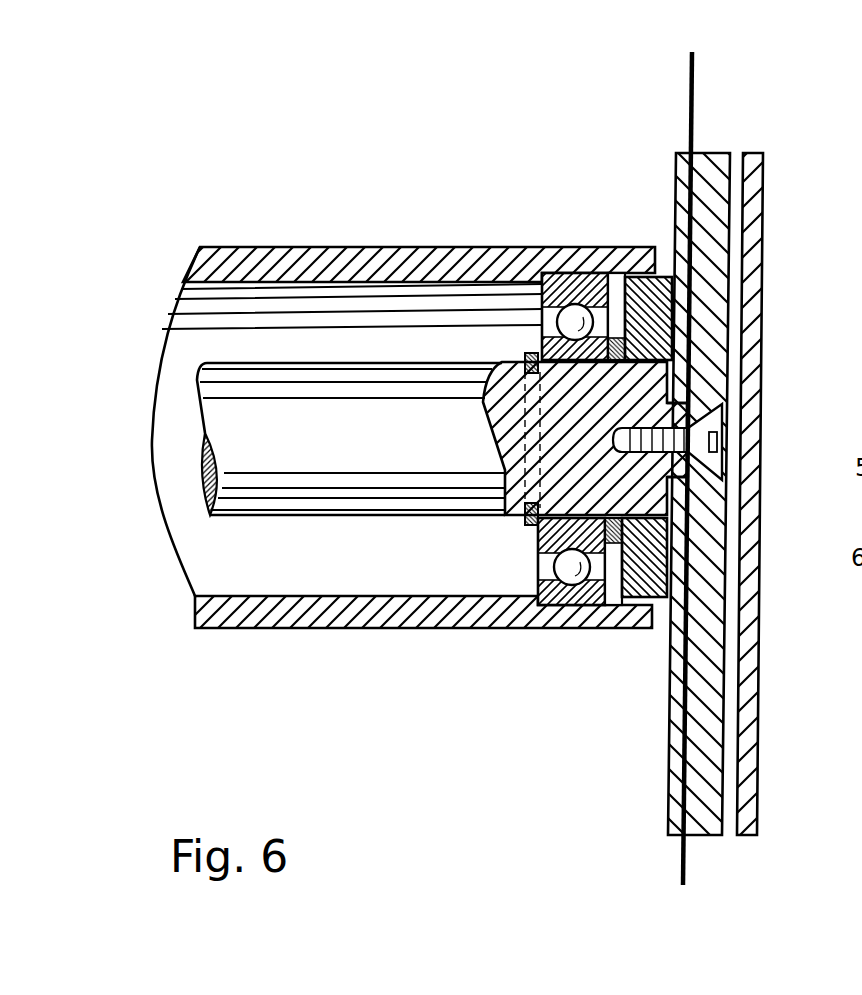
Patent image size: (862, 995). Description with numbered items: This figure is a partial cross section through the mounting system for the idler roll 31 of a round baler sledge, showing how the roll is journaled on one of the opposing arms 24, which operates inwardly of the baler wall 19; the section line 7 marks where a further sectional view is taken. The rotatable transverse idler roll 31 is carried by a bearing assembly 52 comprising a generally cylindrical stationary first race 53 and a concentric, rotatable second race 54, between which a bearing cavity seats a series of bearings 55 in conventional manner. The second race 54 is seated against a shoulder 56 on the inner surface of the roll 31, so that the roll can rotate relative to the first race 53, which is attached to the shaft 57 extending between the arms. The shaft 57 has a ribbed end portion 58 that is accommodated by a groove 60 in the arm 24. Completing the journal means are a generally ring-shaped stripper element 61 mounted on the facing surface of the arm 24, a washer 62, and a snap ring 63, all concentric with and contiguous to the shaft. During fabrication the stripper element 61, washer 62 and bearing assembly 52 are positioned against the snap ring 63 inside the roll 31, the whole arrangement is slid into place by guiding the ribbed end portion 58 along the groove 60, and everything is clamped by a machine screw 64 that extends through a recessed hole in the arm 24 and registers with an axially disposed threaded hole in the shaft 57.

The section line 7- 7 is at (565, 82).
The wall 19 is at (762, 213).
The arm 24 is at (714, 154).
The idler roll 31 is at (293, 238).
The bearing assembly 52 is at (458, 554).
The first race 53 is at (537, 540).
The second race 54 is at (537, 588).
The bearings 55 is at (565, 606).
The shoulder 56 is at (540, 275).
The shaft 57 is at (305, 527).
The ribbed end portion 58 is at (688, 474).
The groove 60 is at (683, 393).
The stripper element 61 is at (665, 274).
The washer 62 is at (618, 275).
The snap ring 63 is at (527, 352).
The machine screw 64 is at (712, 418).